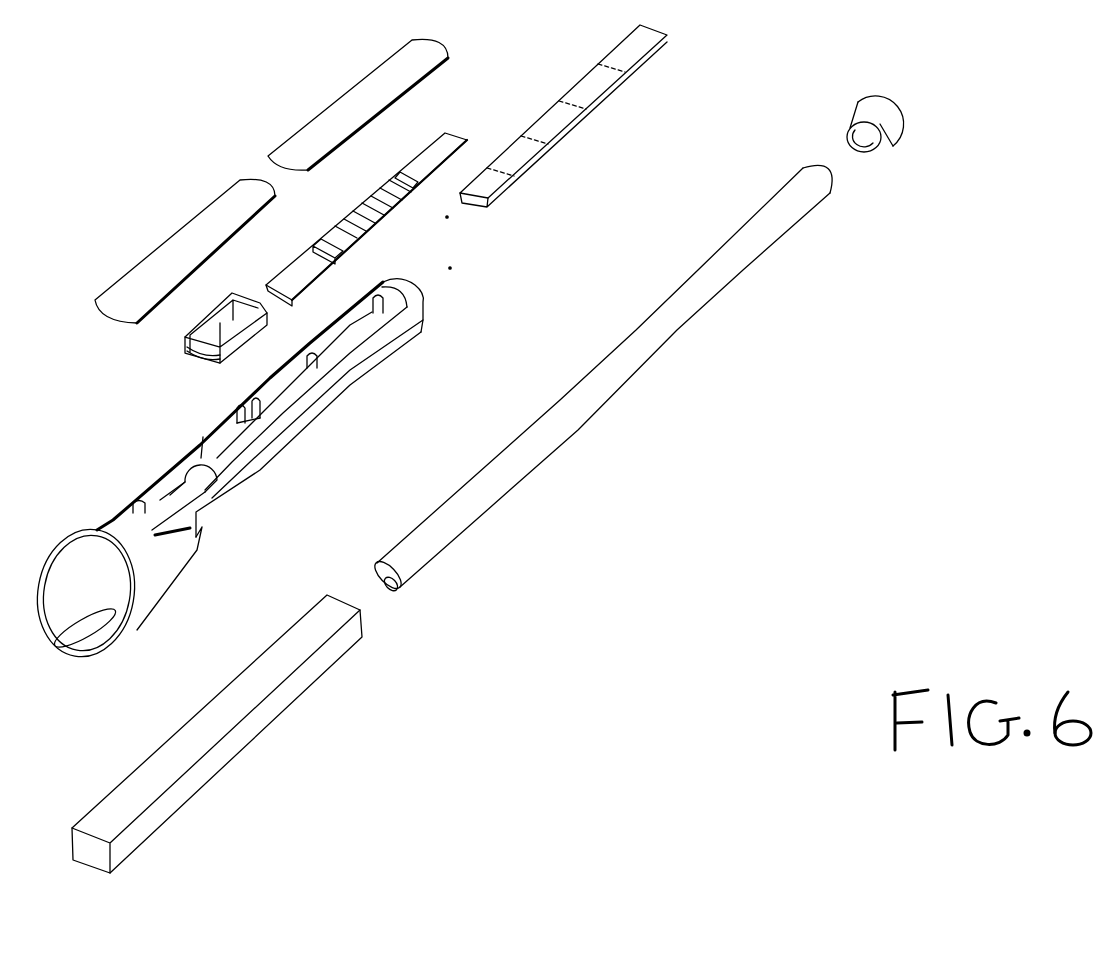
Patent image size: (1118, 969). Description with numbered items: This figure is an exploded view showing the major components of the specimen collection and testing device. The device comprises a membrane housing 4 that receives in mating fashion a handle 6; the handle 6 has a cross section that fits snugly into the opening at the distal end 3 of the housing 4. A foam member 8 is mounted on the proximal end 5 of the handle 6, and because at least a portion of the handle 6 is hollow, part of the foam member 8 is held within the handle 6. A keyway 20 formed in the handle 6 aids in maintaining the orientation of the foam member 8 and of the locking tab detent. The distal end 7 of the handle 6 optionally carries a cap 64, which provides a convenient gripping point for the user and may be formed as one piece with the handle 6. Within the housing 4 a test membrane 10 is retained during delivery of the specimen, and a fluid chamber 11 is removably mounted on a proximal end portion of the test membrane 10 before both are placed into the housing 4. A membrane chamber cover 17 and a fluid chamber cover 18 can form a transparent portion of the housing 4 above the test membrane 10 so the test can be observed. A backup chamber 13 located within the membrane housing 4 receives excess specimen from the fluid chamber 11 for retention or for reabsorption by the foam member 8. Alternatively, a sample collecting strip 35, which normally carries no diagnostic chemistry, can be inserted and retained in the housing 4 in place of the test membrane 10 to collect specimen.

The distal end 3 is at (254, 472).
The membrane housing 4 is at (150, 463).
The proximal end 5 is at (373, 560).
The handle 6 is at (598, 400).
The distal end 7 is at (797, 170).
The foam member 8 is at (282, 698).
The test membrane 10 is at (385, 216).
The fluid chamber 11 is at (230, 328).
The backup chamber 13 is at (200, 478).
The membrane chamber cover 17 is at (350, 83).
The fluid chamber cover 18 is at (205, 210).
The keyway 20 is at (388, 600).
The sample collecting strip 35 is at (625, 52).
The cap 64 is at (857, 107).